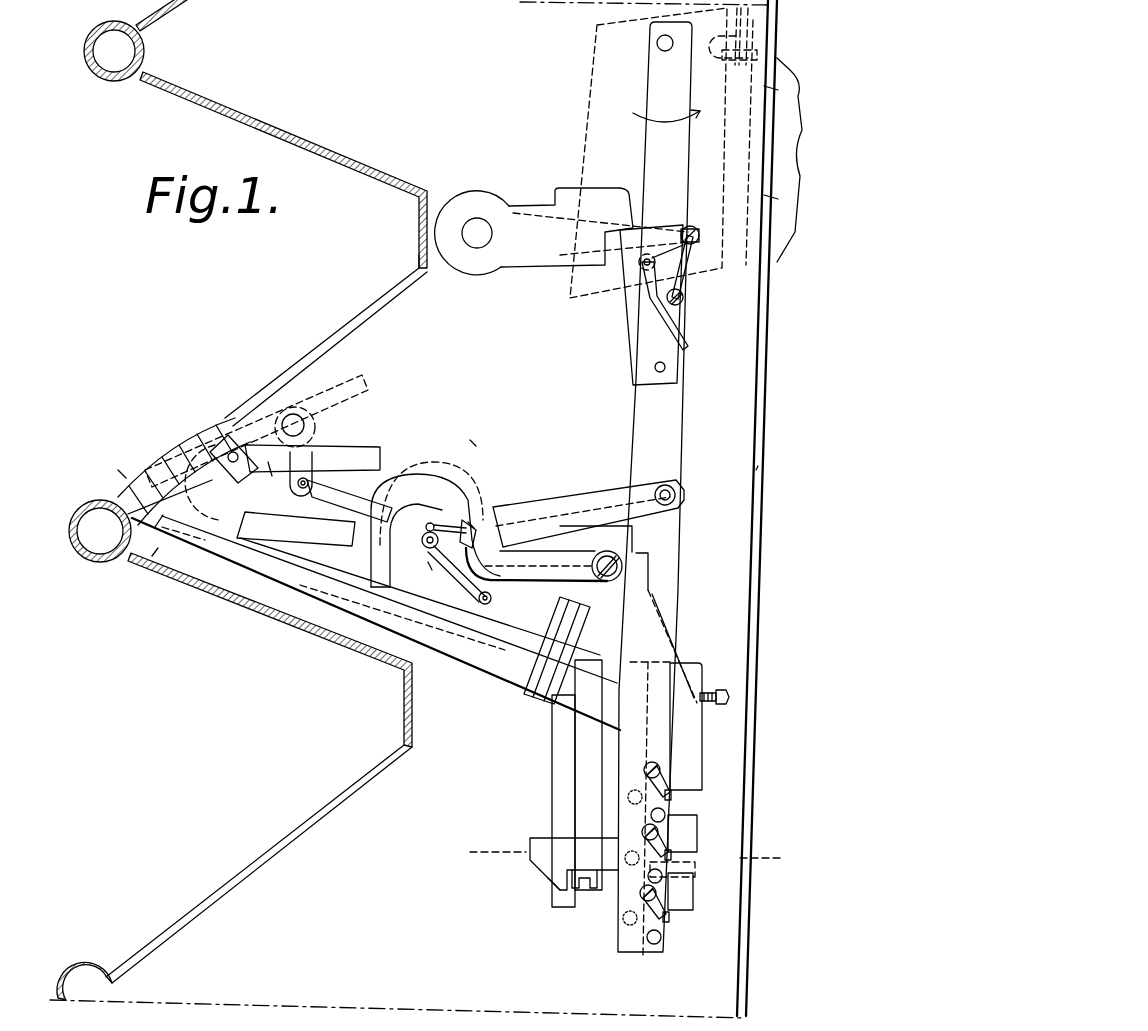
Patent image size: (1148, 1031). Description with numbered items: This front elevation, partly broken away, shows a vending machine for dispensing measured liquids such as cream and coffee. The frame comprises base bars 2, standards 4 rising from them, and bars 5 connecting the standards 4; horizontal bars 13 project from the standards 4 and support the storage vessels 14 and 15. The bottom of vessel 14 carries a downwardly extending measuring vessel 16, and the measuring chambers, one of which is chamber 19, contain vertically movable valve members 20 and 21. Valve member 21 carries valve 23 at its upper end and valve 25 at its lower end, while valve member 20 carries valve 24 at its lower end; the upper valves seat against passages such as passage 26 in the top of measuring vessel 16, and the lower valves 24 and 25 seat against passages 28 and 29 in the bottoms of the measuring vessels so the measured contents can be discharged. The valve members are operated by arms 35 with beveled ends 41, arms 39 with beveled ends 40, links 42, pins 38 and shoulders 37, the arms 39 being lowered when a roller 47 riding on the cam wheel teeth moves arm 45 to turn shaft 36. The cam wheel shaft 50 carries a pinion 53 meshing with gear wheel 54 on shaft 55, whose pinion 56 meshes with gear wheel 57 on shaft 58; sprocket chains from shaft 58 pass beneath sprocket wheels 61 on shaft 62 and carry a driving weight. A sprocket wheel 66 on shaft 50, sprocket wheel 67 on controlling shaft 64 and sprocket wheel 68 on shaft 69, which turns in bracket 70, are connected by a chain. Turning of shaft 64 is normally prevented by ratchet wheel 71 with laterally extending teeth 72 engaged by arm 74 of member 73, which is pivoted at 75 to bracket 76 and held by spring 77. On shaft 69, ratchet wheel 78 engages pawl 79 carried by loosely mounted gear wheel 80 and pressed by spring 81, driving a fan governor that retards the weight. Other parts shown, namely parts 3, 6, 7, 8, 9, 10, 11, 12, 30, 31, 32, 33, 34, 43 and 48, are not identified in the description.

The base bars 2 is at (758, 412).
The tube 3 is at (268, 388).
The standards 4 is at (178, 442).
The bars 5 is at (118, 470).
The block 6 is at (236, 465).
The frame bar 7 is at (590, 706).
The section line 8 is at (624, 855).
The arm 9 is at (368, 420).
The arm 10 is at (470, 440).
The pin 11 is at (272, 480).
The bar 12 is at (366, 452).
The horizontal bars 13 is at (256, 498).
The storage vessel 14 is at (100, 500).
The storage vessel 15 is at (152, 556).
The measuring vessel 16 is at (222, 556).
The measuring chamber 19 is at (462, 658).
The valve member 20 is at (527, 690).
The valve member 21 is at (342, 530).
The valve 23 is at (365, 576).
The valve 24 is at (440, 488).
The valve 25 is at (624, 566).
The passage 26 is at (620, 536).
The passage 28 is at (370, 505).
The passage 29 is at (296, 529).
The pin 30 is at (302, 492).
The pivot 31 is at (426, 531).
The link 32 is at (428, 562).
The pin 33 is at (448, 520).
The link 34 is at (476, 596).
The arms 35 is at (468, 522).
The shaft 36 is at (466, 530).
The shoulder 37 is at (495, 603).
The pins 38 is at (512, 590).
The arms 39 is at (656, 43).
The beveled ends 40 is at (660, 143).
The beveled ends 41 is at (600, 502).
The links 42 is at (532, 535).
The hook 43 is at (573, 882).
The arm 45 is at (592, 742).
The roller 47 is at (548, 878).
The bracket 48 is at (535, 868).
The shaft 50 is at (676, 740).
The pinion 53 is at (685, 642).
The gear wheel 54 is at (729, 697).
The shaft 55 is at (685, 880).
The pinion 56 is at (695, 870).
The gear wheel 57 is at (628, 796).
The shaft 58 is at (666, 816).
The sprocket wheels 61 is at (678, 795).
The shaft 62 is at (661, 769).
The controlling shaft 64 is at (680, 801).
The sprocket wheel 66 is at (478, 226).
The sprocket wheel 67 is at (416, 300).
The sprocket wheel 68 is at (528, 262).
The shaft 69 is at (583, 302).
The bracket 70 is at (592, 77).
The ratchet wheel 71 is at (634, 290).
The ratchet teeth 72 is at (750, 46).
The member 73 is at (760, 56).
The arm 74 is at (752, 143).
The pivot 75 is at (770, 89).
The bracket 76 is at (758, 466).
The spring 77 is at (790, 152).
The ratchet wheel 78 is at (637, 234).
The pawl 79 is at (667, 368).
The gear wheel 80 is at (685, 300).
The spring 81 is at (691, 225).